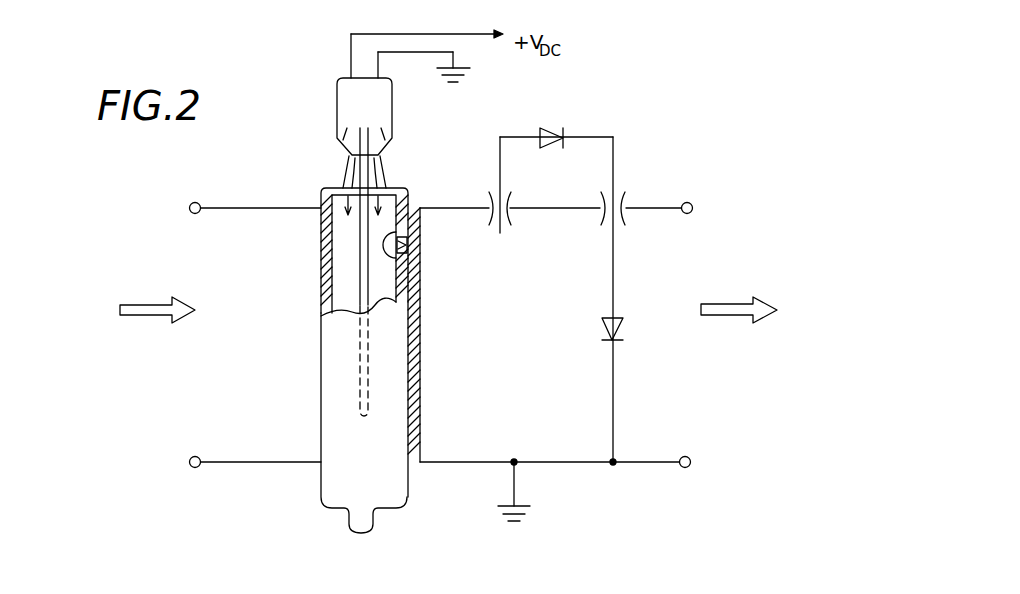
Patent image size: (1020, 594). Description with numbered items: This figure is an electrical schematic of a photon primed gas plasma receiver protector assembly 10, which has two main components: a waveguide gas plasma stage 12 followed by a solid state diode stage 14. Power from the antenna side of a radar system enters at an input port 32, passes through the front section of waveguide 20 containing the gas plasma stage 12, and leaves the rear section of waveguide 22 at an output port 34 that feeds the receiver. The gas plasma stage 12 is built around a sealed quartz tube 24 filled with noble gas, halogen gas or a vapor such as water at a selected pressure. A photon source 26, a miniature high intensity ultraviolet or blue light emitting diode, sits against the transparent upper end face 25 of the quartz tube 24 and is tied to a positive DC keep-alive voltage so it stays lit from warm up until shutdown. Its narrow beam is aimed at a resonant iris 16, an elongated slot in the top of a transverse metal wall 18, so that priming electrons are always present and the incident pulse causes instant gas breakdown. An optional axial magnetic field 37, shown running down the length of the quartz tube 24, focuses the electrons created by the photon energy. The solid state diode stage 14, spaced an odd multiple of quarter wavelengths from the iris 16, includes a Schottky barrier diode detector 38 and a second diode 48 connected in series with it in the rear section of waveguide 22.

The receiver protector assembly 10 is at (624, 97).
The waveguide gas plasma stage 12 is at (281, 312).
The solid state diode stage 14 is at (516, 302).
The resonant iris 16 is at (409, 250).
The transverse metal wall 18 is at (421, 374).
The front section of waveguide 20 is at (257, 465).
The rear section of waveguide 22 is at (649, 465).
The sealed quartz tube 24 is at (343, 495).
The transparent upper end face 25 is at (325, 190).
The photon source 26 is at (339, 85).
The input port 32 is at (200, 347).
The output port 34 is at (678, 380).
The axial magnetic field 37 is at (356, 376).
The Schottky barrier diode detector 38 is at (549, 126).
The diode 48 is at (623, 323).